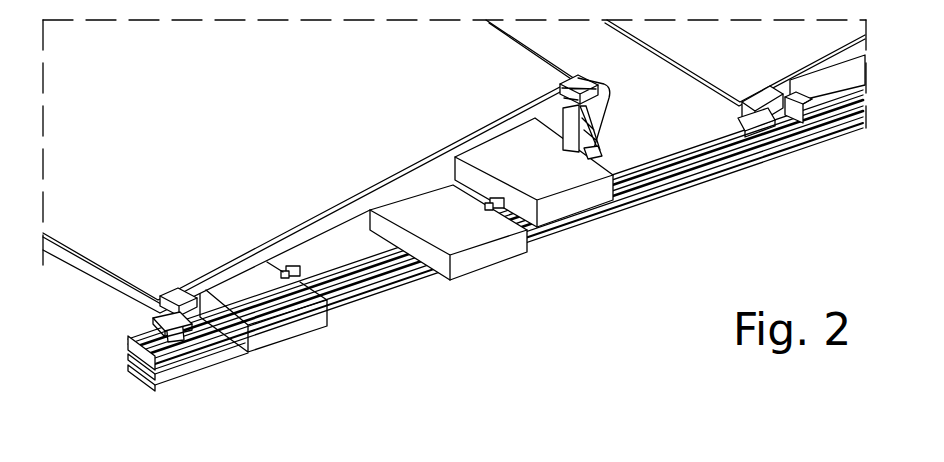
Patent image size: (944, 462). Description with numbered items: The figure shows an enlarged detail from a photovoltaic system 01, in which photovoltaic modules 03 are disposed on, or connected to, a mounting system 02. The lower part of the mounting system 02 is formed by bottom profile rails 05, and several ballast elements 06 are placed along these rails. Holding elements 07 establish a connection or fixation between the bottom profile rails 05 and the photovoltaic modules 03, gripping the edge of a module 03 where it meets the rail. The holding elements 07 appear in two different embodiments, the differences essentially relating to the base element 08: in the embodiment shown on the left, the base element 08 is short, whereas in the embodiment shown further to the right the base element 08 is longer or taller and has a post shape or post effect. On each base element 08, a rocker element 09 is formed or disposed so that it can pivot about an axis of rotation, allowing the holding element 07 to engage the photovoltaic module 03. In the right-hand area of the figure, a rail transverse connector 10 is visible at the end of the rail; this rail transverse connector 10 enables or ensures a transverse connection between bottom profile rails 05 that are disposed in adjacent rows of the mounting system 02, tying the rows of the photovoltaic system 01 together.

The photovoltaic system 01 is at (758, 214).
The mounting system 02 is at (647, 207).
The photovoltaic modules 03 is at (255, 127).
The bottom profile rails 05 is at (372, 293).
The ballast elements 06 is at (513, 252).
The holding elements 07 is at (187, 340).
The base element 08 is at (157, 322).
The rocker element 09 is at (195, 300).
The rail transverse connector 10 is at (795, 127).